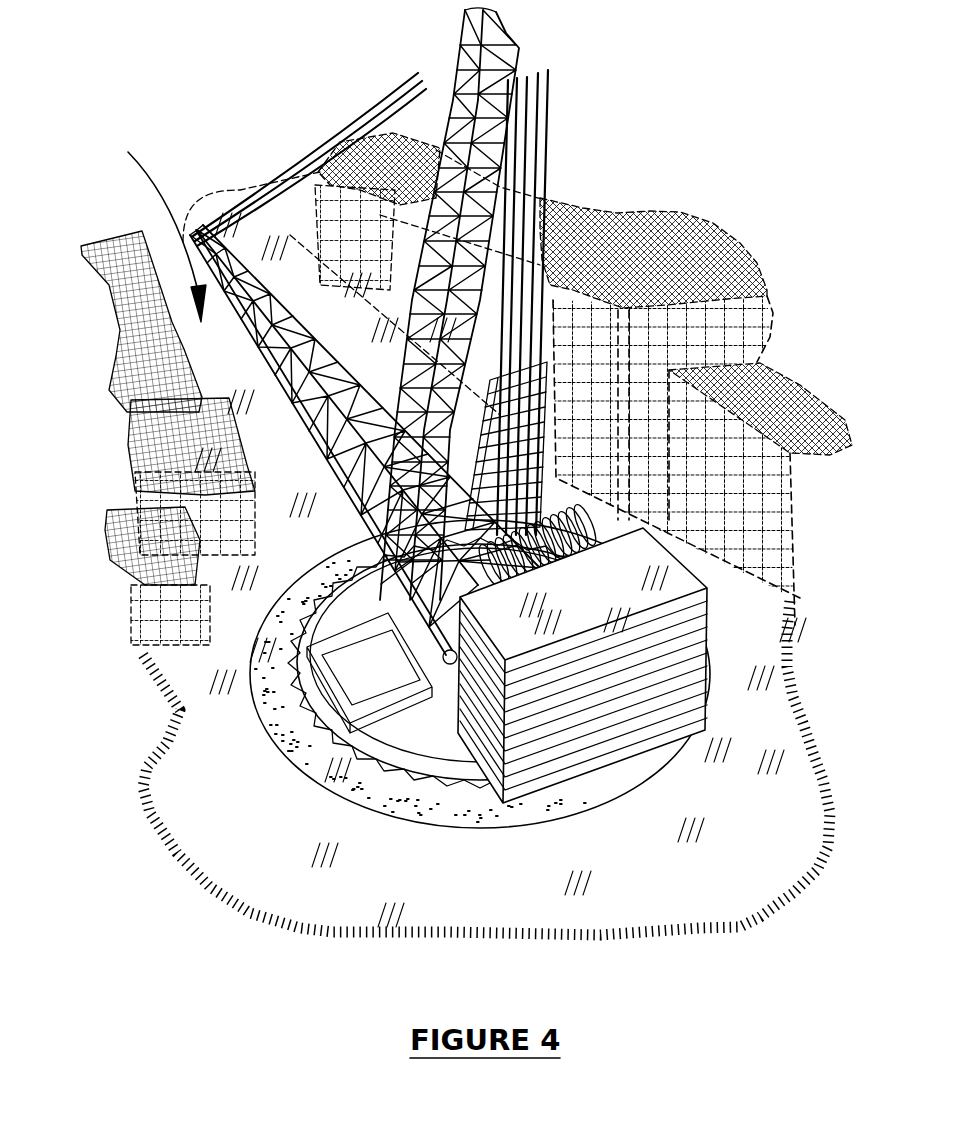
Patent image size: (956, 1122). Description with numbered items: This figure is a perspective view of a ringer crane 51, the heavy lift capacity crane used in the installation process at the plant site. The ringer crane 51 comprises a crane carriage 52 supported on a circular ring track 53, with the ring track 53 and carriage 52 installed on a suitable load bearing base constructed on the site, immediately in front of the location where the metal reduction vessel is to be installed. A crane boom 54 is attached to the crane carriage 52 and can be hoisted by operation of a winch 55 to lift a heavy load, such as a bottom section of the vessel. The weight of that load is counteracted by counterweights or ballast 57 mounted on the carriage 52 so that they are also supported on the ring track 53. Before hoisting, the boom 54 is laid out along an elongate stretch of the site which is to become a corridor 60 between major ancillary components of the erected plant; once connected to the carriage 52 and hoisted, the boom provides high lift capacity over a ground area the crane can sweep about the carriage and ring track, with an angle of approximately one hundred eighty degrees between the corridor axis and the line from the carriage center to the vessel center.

The ringer crane 51 is at (307, 787).
The crane carriage 52 is at (487, 562).
The circular ring track 53 is at (397, 770).
The crane boom 54 is at (268, 360).
The winch 55 is at (393, 97).
The counterweights or ballast 57 is at (640, 668).
The corridor 60 is at (138, 228).